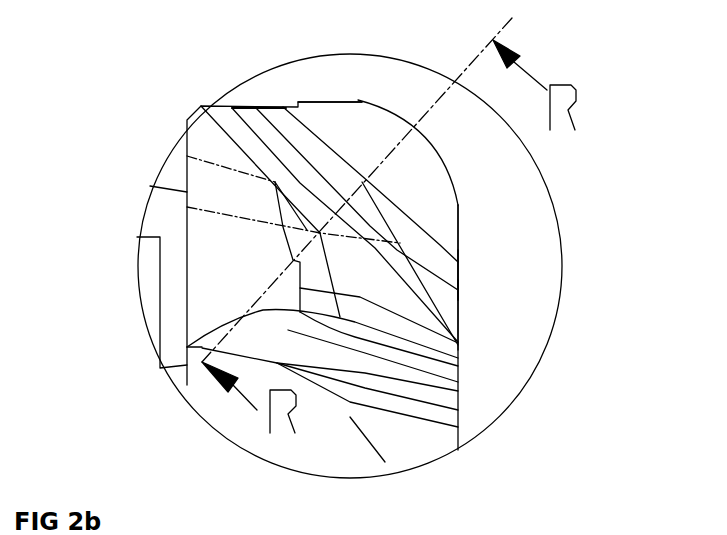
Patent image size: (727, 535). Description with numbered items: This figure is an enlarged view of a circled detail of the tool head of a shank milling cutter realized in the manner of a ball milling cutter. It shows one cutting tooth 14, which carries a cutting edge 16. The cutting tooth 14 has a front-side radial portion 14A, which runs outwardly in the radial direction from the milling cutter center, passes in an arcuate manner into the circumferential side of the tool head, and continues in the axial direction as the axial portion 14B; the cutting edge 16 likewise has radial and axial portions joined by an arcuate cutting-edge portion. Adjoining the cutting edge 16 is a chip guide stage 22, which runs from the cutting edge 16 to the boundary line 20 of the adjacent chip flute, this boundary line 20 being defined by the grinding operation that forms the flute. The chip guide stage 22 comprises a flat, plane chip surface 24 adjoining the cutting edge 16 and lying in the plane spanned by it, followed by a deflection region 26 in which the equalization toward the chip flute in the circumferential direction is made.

The cutting tooth 14 is at (454, 165).
The radial portion 14A is at (460, 288).
The axial portion 14B is at (362, 102).
The cutting edge 16 is at (375, 110).
The boundary line 20 is at (240, 141).
The chip guide stage 22 is at (336, 180).
The chip surface 24 is at (407, 163).
The deflection region 26 is at (300, 134).